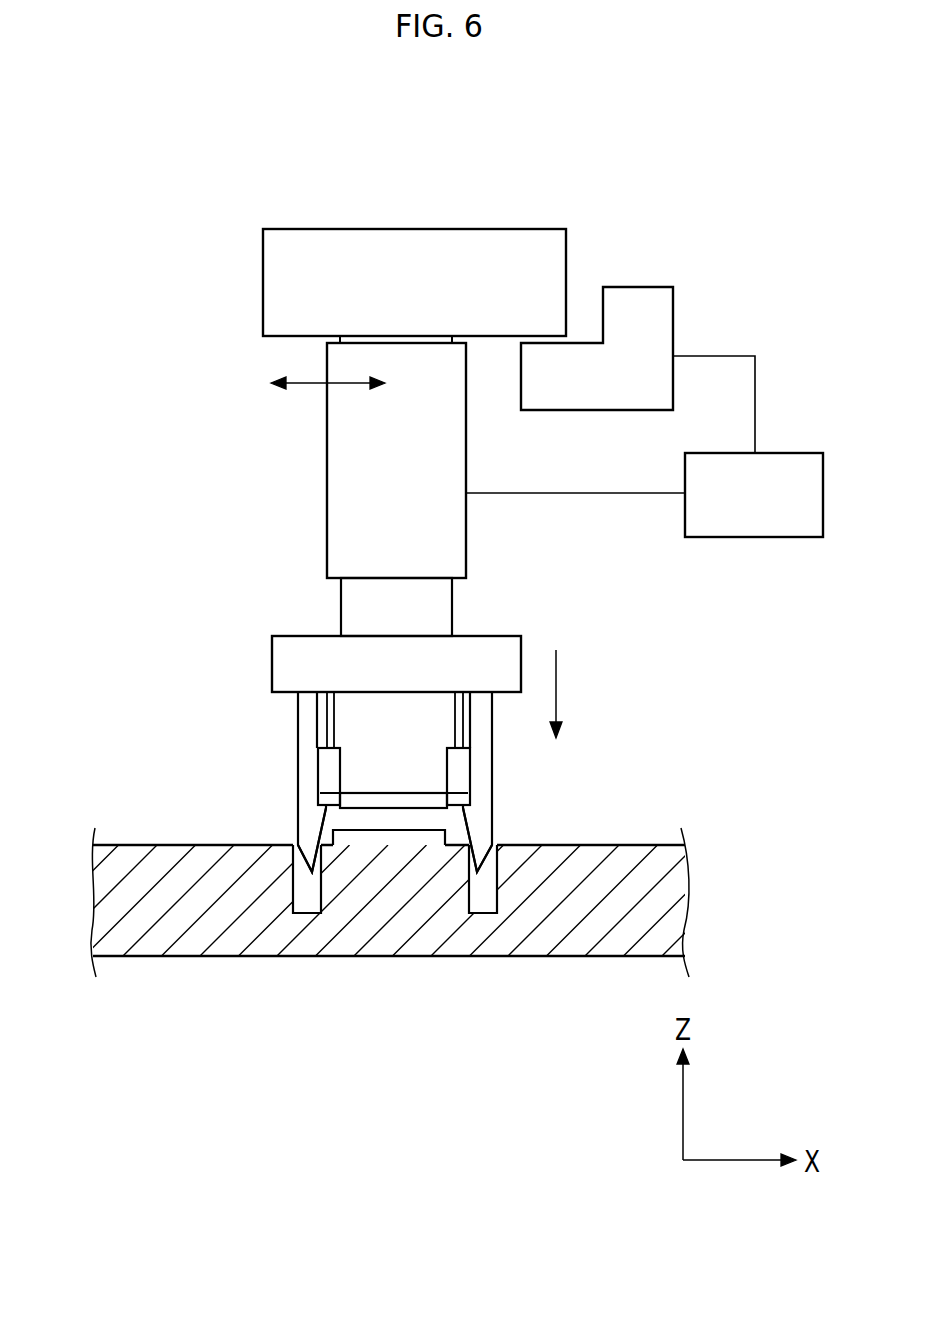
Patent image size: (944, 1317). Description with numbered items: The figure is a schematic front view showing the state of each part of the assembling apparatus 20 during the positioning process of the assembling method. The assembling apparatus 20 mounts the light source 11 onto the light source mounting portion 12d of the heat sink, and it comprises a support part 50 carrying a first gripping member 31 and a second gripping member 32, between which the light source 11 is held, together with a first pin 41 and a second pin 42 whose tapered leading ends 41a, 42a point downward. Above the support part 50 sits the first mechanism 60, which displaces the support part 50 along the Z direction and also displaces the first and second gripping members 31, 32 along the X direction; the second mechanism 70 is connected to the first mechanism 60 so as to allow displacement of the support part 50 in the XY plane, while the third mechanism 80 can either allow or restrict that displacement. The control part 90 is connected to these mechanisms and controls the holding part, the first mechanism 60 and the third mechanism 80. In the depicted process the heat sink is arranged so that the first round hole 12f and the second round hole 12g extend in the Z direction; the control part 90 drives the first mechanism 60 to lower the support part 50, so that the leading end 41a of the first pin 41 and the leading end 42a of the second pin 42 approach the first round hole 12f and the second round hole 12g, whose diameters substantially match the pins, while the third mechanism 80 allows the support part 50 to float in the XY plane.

The assembling apparatus 20 is at (731, 211).
The second mechanism 70 is at (499, 255).
The third mechanism 80 is at (640, 300).
The first mechanism 60 is at (353, 493).
The support part 50 is at (495, 650).
The control part 90 is at (749, 538).
The first pin 41 is at (303, 753).
The leading end of the first pin 41a is at (308, 845).
The second pin 42 is at (483, 758).
The leading end of the second pin 42a is at (480, 837).
The first gripping member 31 is at (334, 762).
The second gripping member 32 is at (452, 763).
The light source 11 is at (395, 802).
The light source mounting portion 12d is at (382, 840).
The first round hole 12f is at (307, 913).
The second round hole 12g is at (478, 913).